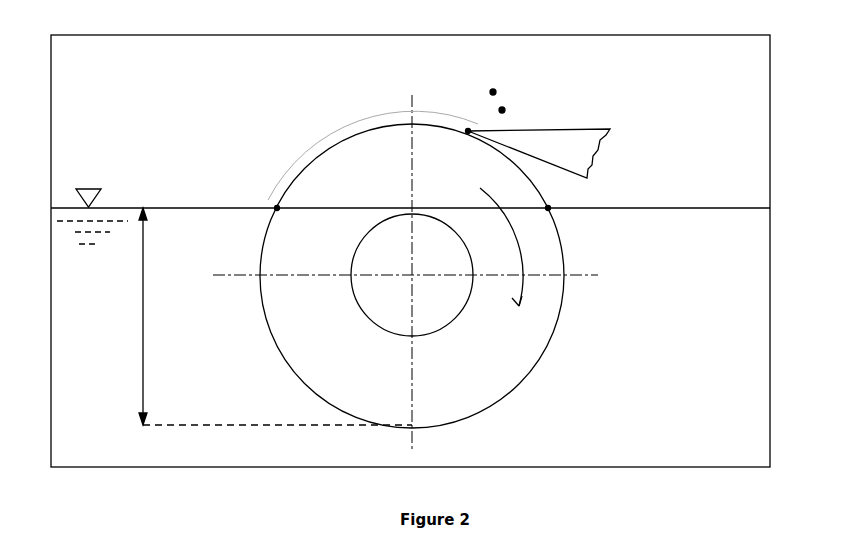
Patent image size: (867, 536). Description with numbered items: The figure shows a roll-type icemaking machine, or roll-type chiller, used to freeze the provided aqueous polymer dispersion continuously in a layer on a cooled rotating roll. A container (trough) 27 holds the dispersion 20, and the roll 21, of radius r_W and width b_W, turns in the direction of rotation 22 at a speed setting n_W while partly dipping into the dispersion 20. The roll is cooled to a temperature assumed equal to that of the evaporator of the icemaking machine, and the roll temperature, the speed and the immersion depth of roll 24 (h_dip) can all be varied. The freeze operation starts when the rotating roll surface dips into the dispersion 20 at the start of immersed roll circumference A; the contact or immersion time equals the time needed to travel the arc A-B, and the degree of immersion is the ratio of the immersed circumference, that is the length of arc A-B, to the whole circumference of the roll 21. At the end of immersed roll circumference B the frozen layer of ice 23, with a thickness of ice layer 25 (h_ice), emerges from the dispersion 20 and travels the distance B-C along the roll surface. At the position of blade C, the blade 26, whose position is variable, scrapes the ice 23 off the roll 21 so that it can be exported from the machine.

The dispersion 20 is at (410, 251).
The roll 21 is at (538, 312).
The direction of rotation 22 is at (426, 275).
The ice 23 is at (255, 322).
The immersion depth of roll h_dip 24 is at (143, 362).
The thickness of ice layer h_ice 25 is at (502, 110).
The blade 26 is at (577, 150).
The container 27 is at (745, 208).
The start of immersed roll circumference A is at (559, 198).
The end of immersed roll circumference B is at (268, 198).
The position of blade C is at (462, 144).